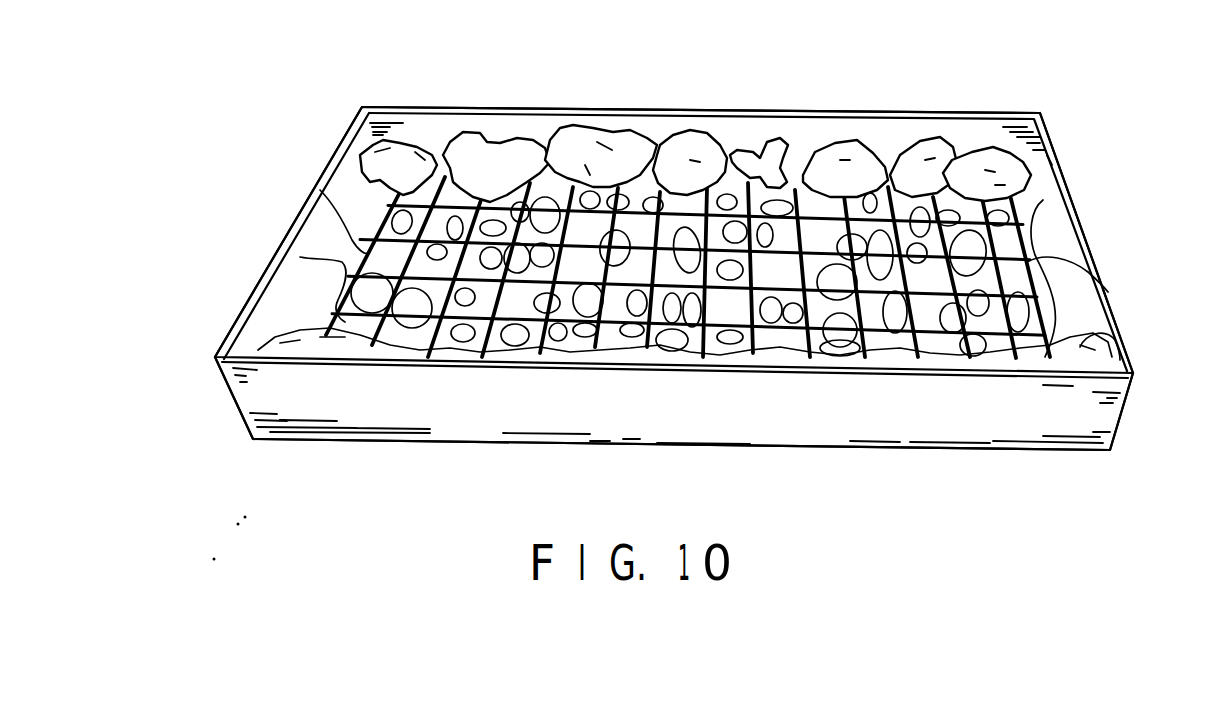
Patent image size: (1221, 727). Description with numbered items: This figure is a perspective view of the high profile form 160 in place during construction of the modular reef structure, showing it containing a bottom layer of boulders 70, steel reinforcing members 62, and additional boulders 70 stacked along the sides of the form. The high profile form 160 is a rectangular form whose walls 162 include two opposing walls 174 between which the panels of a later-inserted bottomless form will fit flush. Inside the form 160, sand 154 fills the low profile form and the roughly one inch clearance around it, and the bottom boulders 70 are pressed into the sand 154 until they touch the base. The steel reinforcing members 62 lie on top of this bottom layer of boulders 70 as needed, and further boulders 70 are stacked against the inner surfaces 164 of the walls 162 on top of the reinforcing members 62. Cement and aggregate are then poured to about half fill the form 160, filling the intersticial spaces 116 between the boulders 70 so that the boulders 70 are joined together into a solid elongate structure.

The steel reinforcing members 62 is at (382, 247).
The boulders 70 is at (432, 150).
The intersticial spaces 116 is at (544, 128).
The sand 154 is at (360, 207).
The high profile form 160 is at (1088, 237).
The walls 162 is at (897, 118).
The inner surfaces 164 is at (381, 118).
The opposing walls 174 is at (247, 334).